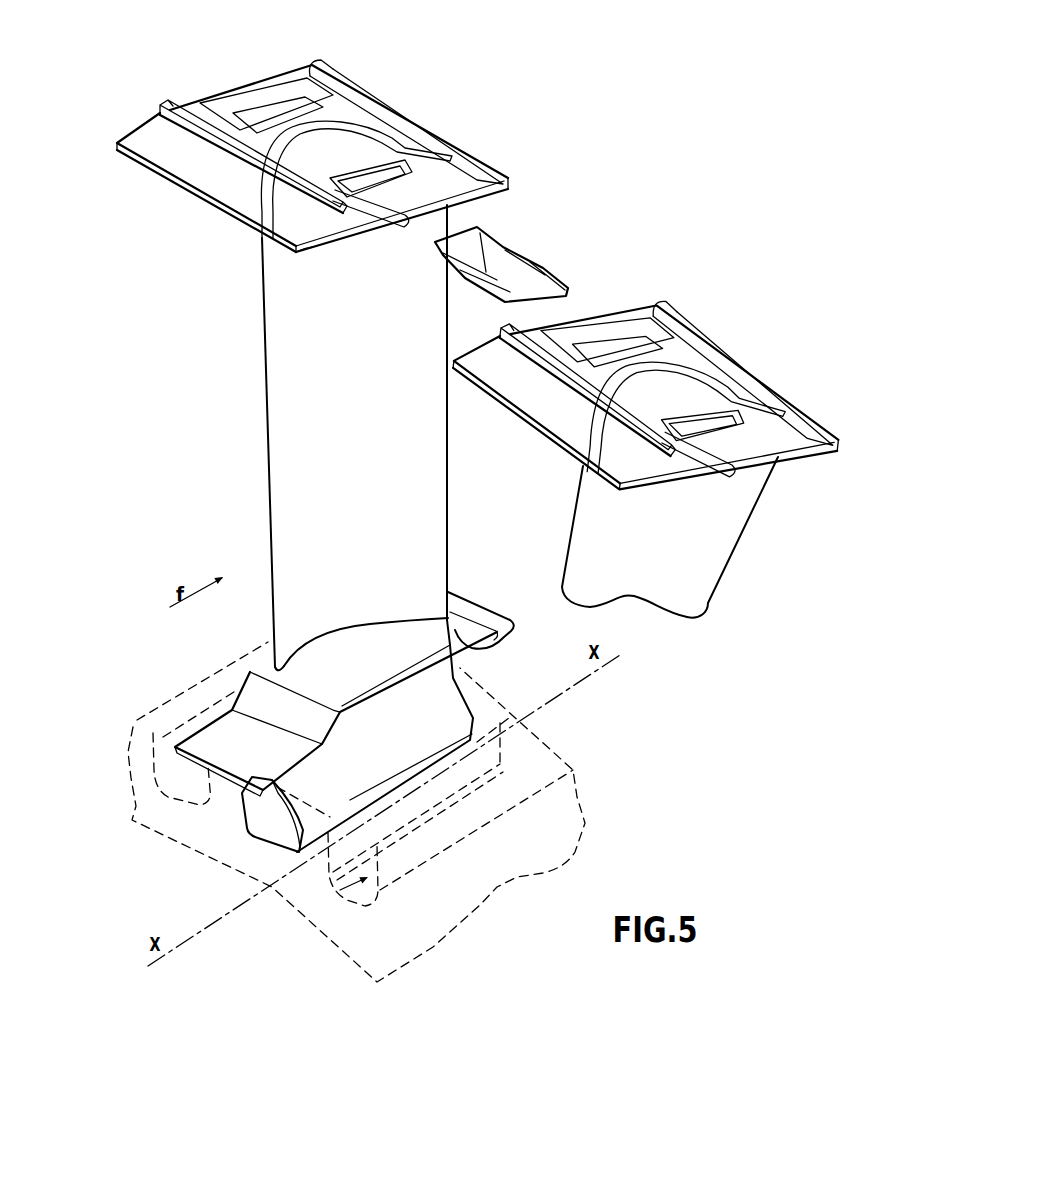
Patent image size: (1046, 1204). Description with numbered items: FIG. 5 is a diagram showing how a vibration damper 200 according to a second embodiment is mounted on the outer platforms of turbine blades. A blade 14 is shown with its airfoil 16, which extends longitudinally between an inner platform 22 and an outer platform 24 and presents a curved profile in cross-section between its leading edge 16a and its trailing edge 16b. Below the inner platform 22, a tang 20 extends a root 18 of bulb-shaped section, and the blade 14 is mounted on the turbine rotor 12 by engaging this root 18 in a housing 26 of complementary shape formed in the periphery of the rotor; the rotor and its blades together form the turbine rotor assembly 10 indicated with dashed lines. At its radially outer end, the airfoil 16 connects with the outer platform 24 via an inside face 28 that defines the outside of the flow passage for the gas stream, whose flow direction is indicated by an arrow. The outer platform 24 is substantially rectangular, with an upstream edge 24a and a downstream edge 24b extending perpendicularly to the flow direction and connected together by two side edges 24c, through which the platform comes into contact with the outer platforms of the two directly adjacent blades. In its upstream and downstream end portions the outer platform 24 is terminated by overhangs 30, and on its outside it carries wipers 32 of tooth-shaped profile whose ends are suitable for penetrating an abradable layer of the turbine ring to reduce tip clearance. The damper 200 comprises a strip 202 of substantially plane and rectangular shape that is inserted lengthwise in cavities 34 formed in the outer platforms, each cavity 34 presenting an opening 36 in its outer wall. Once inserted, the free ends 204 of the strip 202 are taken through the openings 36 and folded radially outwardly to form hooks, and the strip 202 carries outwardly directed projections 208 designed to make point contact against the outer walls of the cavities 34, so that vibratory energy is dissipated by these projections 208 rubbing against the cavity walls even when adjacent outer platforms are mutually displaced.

The turbine rotor 10 is at (374, 812).
The turbine rotor 12 is at (557, 738).
The blade 14 is at (476, 528).
The airfoil 16 is at (354, 437).
The leading edge 16a is at (264, 411).
The trailing edge 16b is at (448, 455).
The root 18 is at (270, 827).
The tang 20 is at (433, 664).
The inner platform 22 is at (475, 610).
The outer platform 24 is at (237, 76).
The upstream edge 24a is at (247, 219).
The downstream edge 24b is at (514, 184).
The side edges 24c is at (140, 132).
The housing 26 is at (354, 889).
The inside face 28 is at (313, 248).
The overhangs 30 is at (494, 174).
The wipers 32 is at (177, 100).
The cavities 34 is at (407, 218).
The opening 36 is at (320, 62).
The vibration damper 200 is at (522, 258).
The strip 202 is at (483, 236).
The free ends 204 is at (440, 273).
The projections 208 is at (530, 280).